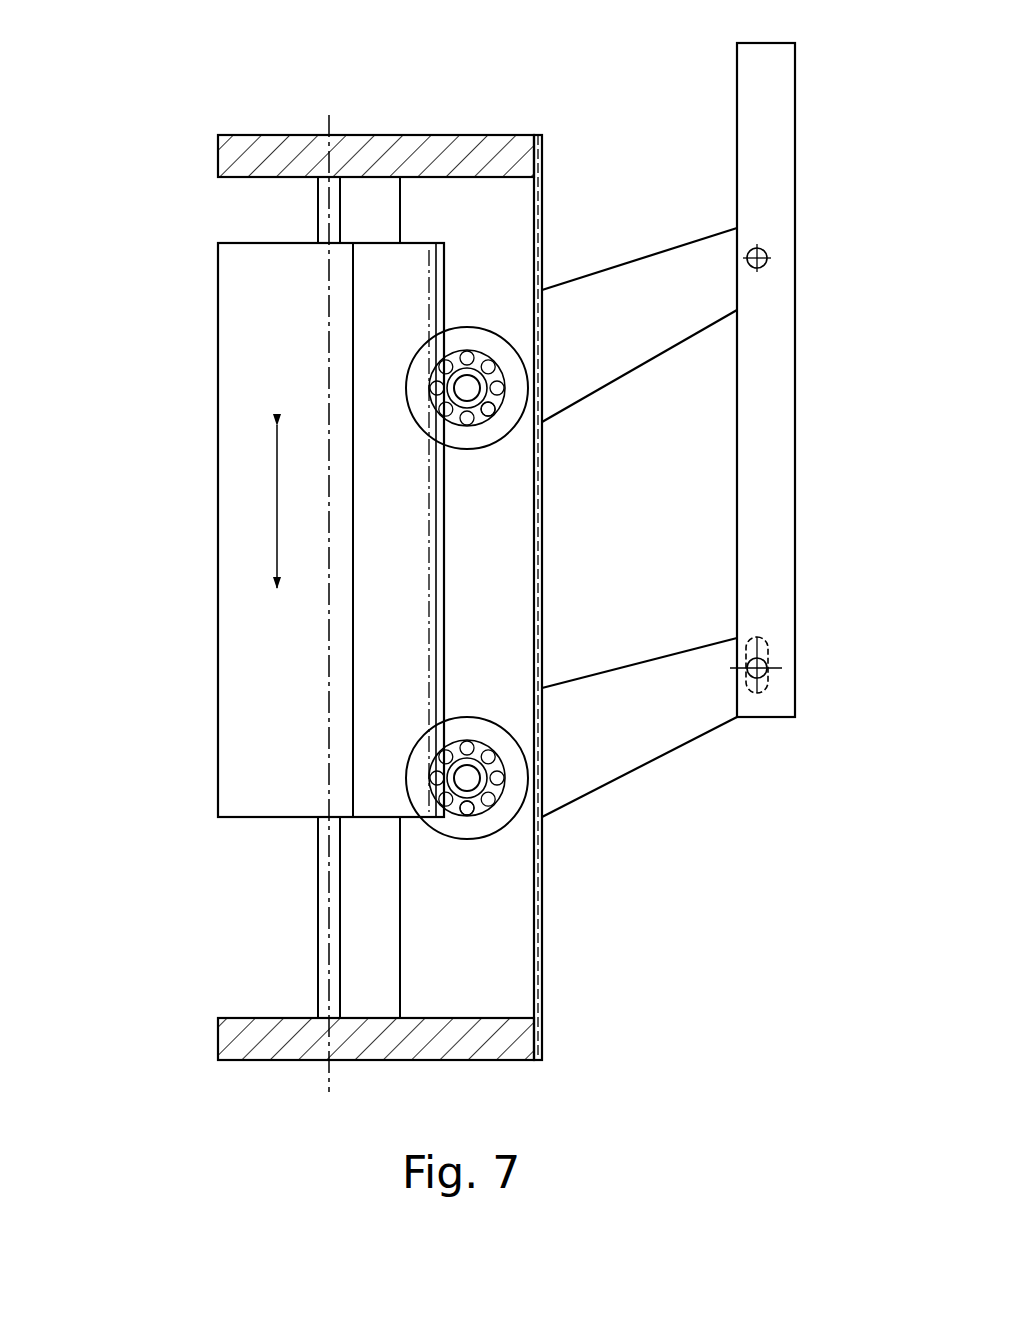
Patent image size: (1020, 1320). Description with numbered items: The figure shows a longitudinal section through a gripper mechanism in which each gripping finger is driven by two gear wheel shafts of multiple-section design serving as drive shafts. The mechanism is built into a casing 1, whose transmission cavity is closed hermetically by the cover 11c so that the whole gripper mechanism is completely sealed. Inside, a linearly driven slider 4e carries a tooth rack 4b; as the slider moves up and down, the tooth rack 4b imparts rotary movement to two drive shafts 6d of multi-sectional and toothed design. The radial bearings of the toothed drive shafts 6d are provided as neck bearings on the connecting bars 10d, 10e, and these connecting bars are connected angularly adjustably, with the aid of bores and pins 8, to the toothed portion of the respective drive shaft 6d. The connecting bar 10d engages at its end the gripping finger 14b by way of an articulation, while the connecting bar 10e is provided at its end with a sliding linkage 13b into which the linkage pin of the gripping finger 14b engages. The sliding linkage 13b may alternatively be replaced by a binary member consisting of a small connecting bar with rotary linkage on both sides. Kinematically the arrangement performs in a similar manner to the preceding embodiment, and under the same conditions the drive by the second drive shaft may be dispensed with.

The casing 1 is at (400, 944).
The tooth rack 4b is at (438, 281).
The slider 4e is at (275, 477).
The drive shaft 6d is at (487, 442).
The pins 8 is at (496, 417).
The connecting bar 10d is at (639, 297).
The connecting bar 10e is at (647, 722).
The cover 11c is at (543, 992).
The sliding linkage 13b is at (744, 640).
The gripping finger 14b is at (737, 72).